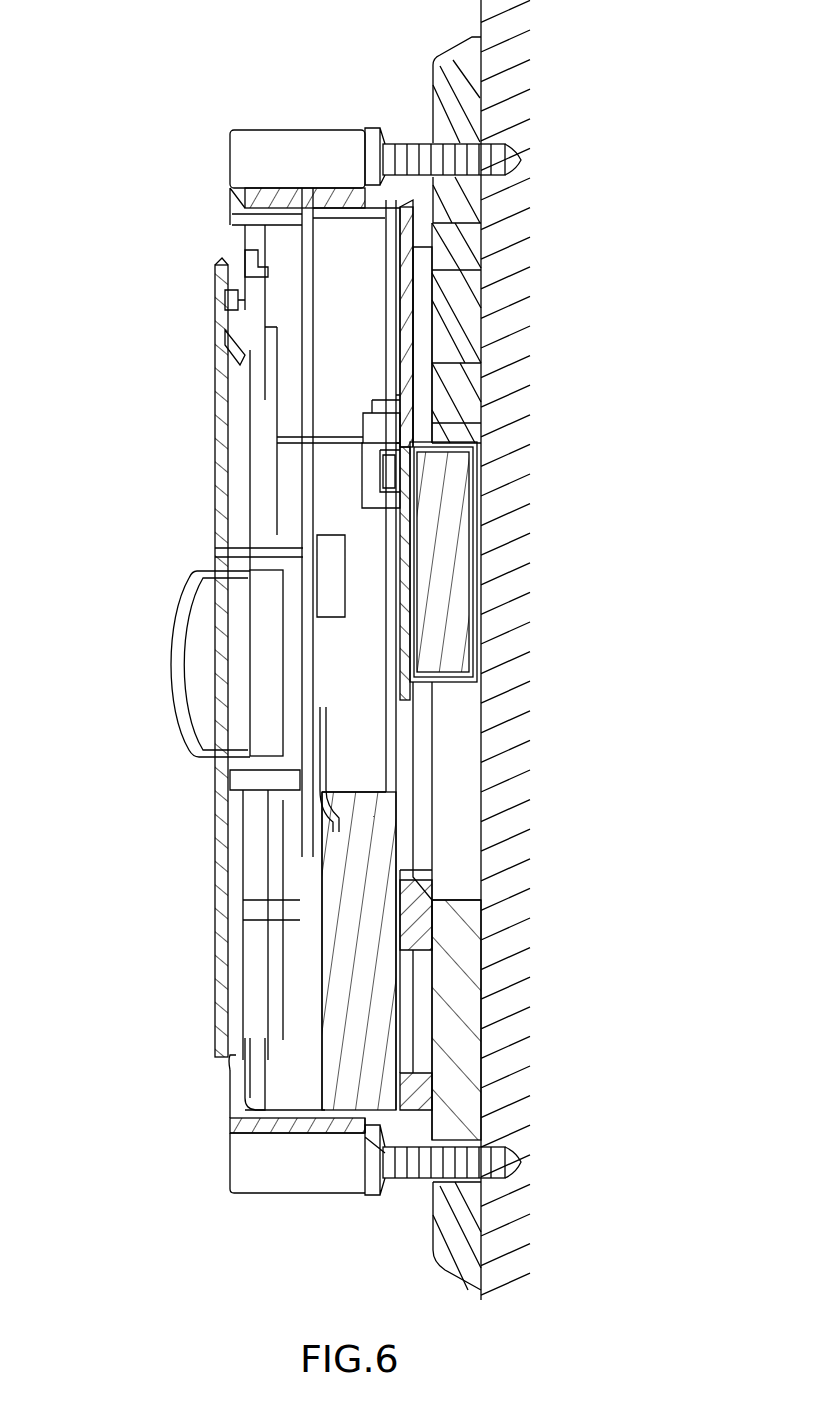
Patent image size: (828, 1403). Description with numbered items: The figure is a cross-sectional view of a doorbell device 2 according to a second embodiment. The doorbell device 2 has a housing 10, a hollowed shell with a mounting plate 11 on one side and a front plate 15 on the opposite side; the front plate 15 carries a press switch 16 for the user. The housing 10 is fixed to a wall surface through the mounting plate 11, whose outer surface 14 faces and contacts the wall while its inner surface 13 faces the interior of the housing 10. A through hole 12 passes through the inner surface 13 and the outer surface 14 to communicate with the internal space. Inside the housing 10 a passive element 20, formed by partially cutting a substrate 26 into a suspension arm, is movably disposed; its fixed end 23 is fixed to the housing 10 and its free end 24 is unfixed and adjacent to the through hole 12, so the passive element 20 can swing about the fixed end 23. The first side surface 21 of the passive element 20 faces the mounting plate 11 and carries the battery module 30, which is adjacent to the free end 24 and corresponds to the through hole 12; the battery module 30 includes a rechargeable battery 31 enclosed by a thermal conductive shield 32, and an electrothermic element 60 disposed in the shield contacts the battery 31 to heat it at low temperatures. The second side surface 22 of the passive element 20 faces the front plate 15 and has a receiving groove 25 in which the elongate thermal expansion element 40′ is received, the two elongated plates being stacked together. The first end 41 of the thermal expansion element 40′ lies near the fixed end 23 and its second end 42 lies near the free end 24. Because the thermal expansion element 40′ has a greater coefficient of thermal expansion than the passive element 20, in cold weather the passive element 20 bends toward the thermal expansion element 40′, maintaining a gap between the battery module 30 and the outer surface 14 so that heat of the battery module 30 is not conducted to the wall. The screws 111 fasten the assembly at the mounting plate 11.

The doorbell device 2 is at (198, 104).
The housing 10 is at (228, 187).
The mounting plate 11 is at (462, 62).
The through hole 12 is at (440, 795).
The inner surface 13 is at (400, 282).
The outer surface 14 is at (433, 100).
The front plate 15 is at (215, 437).
The press switch 16 is at (170, 668).
The passive element 20 is at (400, 377).
The first side surface 21 is at (482, 393).
The second side surface 22 is at (400, 350).
The fixed end 23 is at (400, 317).
The free end 24 is at (398, 705).
The receiving groove 25 is at (400, 383).
The substrate 26 is at (400, 1080).
The battery module 30 is at (598, 512).
The battery 31 is at (443, 512).
The thermal conductive shield 32 is at (470, 570).
The thermal expansion element 40′ is at (395, 460).
The first end 41 is at (482, 370).
The second end 42 is at (403, 645).
The electrothermic element 60 is at (412, 482).
The screw 111 is at (395, 158).